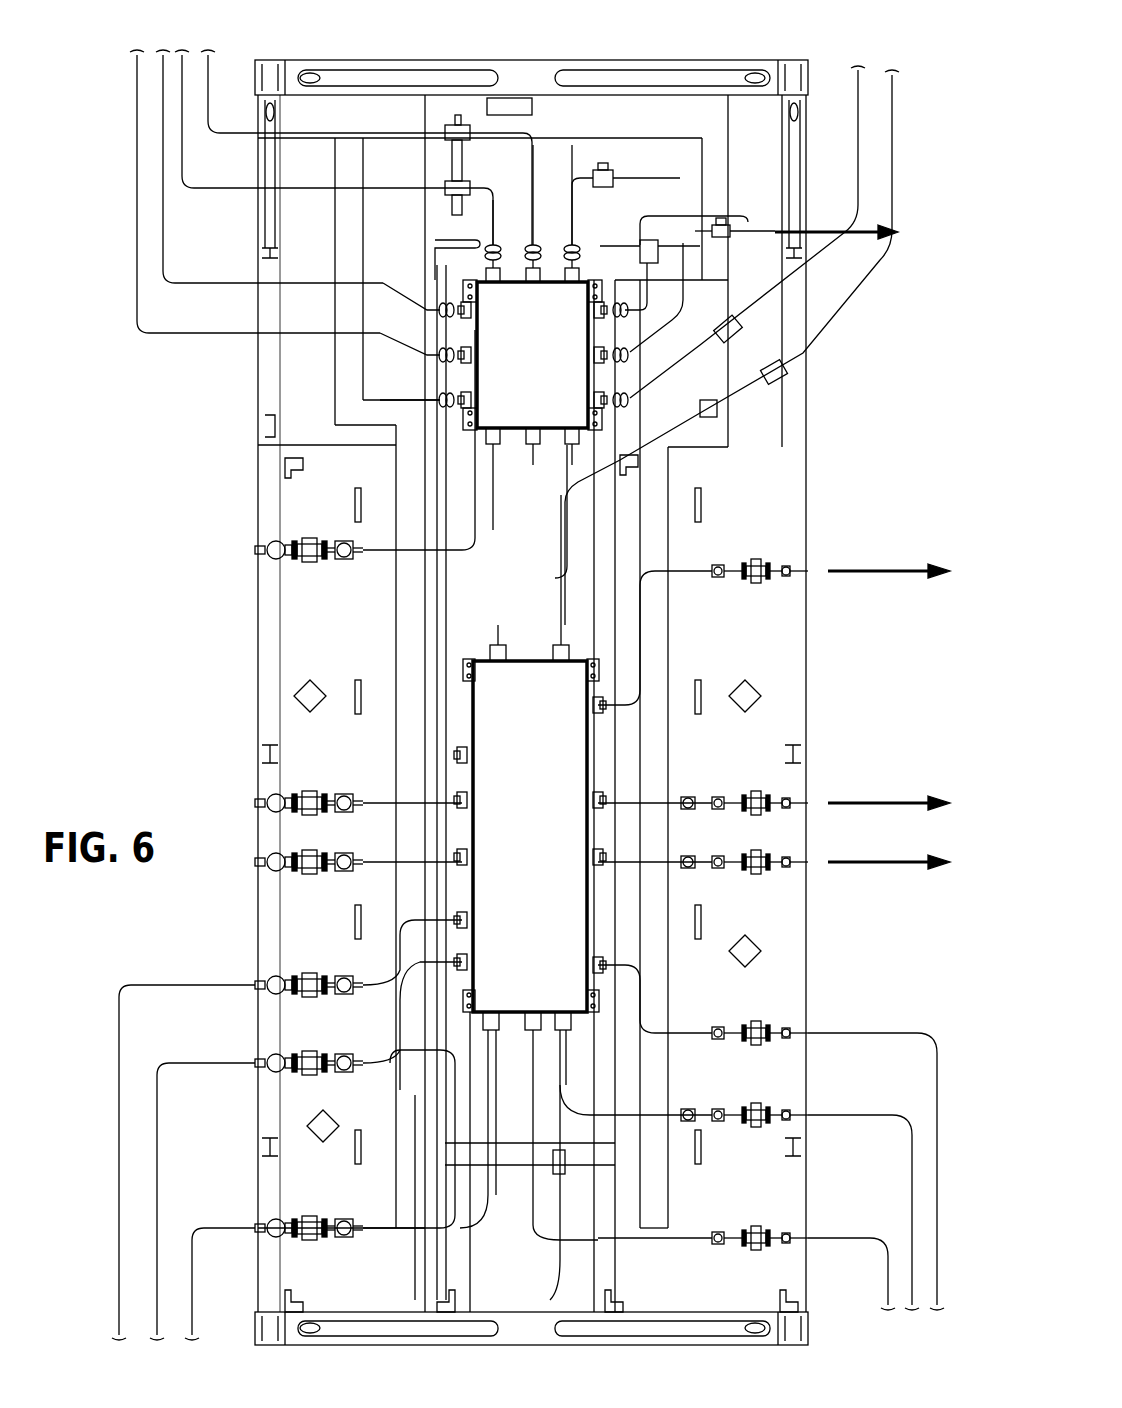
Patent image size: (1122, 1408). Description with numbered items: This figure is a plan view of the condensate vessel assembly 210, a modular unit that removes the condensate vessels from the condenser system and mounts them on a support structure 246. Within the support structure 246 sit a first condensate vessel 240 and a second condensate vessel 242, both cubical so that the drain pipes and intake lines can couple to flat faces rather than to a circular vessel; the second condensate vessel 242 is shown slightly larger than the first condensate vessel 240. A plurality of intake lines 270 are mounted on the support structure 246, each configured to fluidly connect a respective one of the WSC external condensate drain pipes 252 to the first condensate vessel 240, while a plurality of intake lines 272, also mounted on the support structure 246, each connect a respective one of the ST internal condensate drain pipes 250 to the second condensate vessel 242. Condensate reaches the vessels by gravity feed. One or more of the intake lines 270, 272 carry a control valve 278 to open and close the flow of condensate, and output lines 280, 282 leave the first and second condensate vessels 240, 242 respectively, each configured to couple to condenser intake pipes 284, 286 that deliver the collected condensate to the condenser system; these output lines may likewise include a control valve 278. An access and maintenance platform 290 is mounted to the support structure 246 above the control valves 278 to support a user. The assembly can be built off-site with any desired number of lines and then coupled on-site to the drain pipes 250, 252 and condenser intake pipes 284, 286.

The condensate vessel assembly 210 is at (770, 48).
The first condensate vessel 240 is at (530, 375).
The second condensate vessel 242 is at (525, 905).
The support structure 246 is at (375, 78).
The ST internal condensate drain pipes 250 is at (192, 1282).
The WSC external condensate drain pipes 252 is at (182, 98).
The intake lines 270 is at (455, 135).
The intake lines 272 is at (365, 1060).
The control valve 278 is at (600, 168).
The output line 280 is at (720, 210).
The output line 282 is at (715, 800).
The condenser intake pipe 284 is at (868, 232).
The condenser intake pipe 286 is at (918, 568).
The access and maintenance platform 290 is at (668, 118).